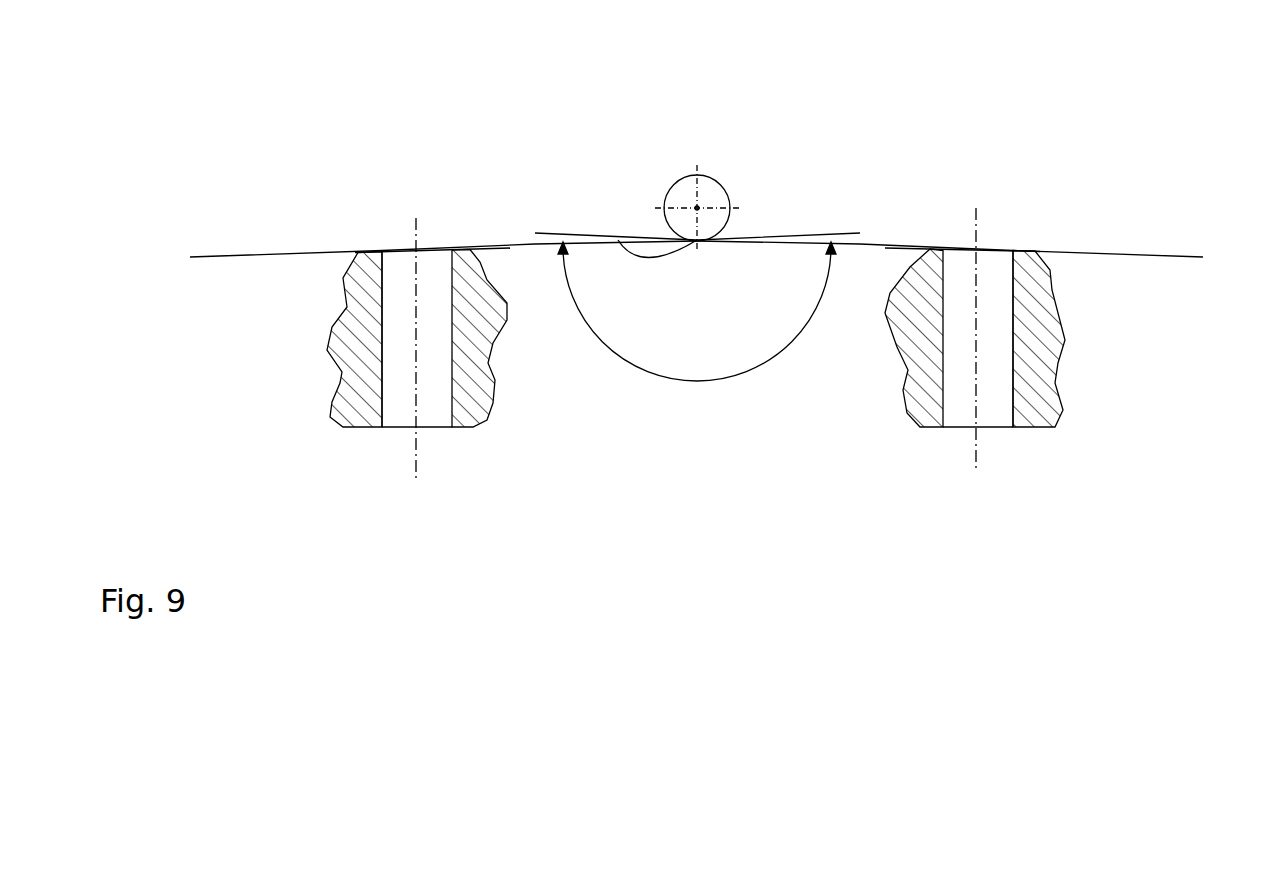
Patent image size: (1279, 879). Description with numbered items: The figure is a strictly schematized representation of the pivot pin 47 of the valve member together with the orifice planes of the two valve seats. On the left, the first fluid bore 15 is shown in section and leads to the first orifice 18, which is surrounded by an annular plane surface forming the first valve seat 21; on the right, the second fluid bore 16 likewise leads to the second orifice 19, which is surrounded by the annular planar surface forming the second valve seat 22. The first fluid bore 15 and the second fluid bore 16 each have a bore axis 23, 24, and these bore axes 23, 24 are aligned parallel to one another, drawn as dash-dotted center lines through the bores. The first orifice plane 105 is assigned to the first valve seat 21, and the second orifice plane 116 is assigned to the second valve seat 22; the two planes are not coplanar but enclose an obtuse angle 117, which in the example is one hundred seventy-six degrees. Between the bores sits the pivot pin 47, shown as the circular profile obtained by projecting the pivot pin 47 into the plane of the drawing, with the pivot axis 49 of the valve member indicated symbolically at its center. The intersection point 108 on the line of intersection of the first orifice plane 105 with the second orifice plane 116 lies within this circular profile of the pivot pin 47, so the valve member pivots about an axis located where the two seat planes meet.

The first fluid bore 15 is at (401, 381).
The second fluid bore 16 is at (991, 407).
The first orifice 18 is at (382, 250).
The second orifice 19 is at (1013, 250).
The first valve seat 21 is at (372, 251).
The second valve seat 22 is at (1023, 250).
The bore axis 23 is at (416, 465).
The bore axis 24 is at (976, 452).
The pivot pin 47 is at (707, 190).
The pivot axis 49 is at (697, 208).
The first orifice plane 105 is at (603, 245).
The intersection point 108 is at (627, 240).
The second orifice plane 116 is at (1125, 254).
The obtuse angle 117 is at (747, 368).